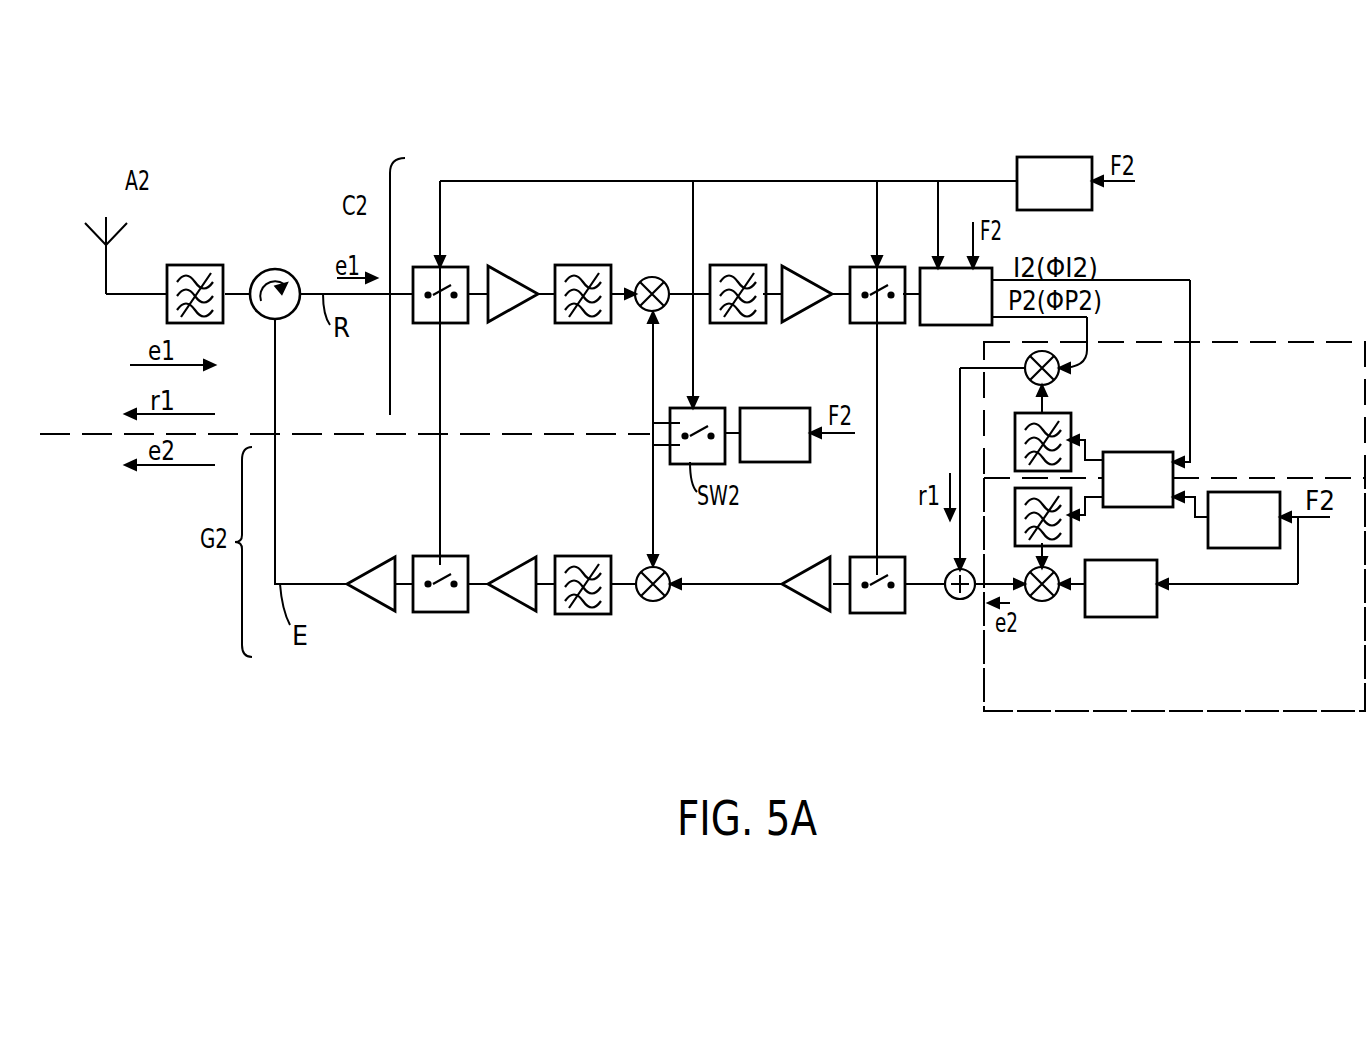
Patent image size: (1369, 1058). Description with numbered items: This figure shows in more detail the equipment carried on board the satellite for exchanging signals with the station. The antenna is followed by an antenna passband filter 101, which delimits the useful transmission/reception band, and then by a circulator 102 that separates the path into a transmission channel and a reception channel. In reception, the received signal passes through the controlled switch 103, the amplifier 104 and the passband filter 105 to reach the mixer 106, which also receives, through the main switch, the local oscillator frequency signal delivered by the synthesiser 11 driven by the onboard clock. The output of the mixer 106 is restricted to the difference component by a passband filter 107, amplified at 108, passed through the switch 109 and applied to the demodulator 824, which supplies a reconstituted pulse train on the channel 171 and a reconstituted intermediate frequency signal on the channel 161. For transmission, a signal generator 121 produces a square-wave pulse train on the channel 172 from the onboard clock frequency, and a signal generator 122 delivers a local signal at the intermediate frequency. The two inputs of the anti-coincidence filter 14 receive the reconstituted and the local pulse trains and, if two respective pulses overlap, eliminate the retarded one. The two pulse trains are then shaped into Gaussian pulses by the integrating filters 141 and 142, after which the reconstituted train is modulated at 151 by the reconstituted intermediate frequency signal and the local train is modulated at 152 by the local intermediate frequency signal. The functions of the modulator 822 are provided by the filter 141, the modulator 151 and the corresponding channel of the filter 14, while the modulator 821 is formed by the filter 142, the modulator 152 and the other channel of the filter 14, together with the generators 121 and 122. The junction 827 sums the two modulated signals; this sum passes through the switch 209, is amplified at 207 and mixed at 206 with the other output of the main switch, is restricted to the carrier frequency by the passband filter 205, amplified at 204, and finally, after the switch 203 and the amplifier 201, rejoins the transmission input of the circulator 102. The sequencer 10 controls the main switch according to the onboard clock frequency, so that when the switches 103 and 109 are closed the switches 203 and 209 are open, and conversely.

The transmission/reception sequencer 10 is at (1067, 157).
The synthesiser of the local oscillator 11 is at (785, 462).
The anti-coincidence filter 14 is at (1160, 452).
The antenna passband filter 101 is at (198, 265).
The circulator 102 is at (278, 270).
The controlled switch 103 is at (455, 323).
The amplifier 104 is at (505, 316).
The passband filter 105 is at (588, 323).
The mixer 106 is at (655, 276).
The passband filter 107 is at (740, 265).
The amplifier 108 is at (800, 272).
The switch 109 is at (860, 323).
The signal generator 121 is at (1250, 492).
The signal generator 122 is at (1130, 617).
The integrating filter 141 is at (1068, 422).
The integrating filter 142 is at (1068, 536).
The modulator 151 is at (1070, 372).
The modulator 152 is at (1042, 601).
The channel 161 is at (1090, 330).
The channel 171 is at (1165, 280).
The channel 172 is at (1195, 517).
The amplifier 201 is at (372, 602).
The switch 203 is at (425, 556).
The amplifier 204 is at (508, 562).
The passband filter 205 is at (590, 556).
The mixer 206 is at (653, 601).
The amplifier 207 is at (805, 603).
The switch 209 is at (877, 613).
The modulator 821 is at (1295, 711).
The modulator 822 is at (1312, 342).
The demodulator 824 is at (997, 268).
The junction 827 is at (962, 600).